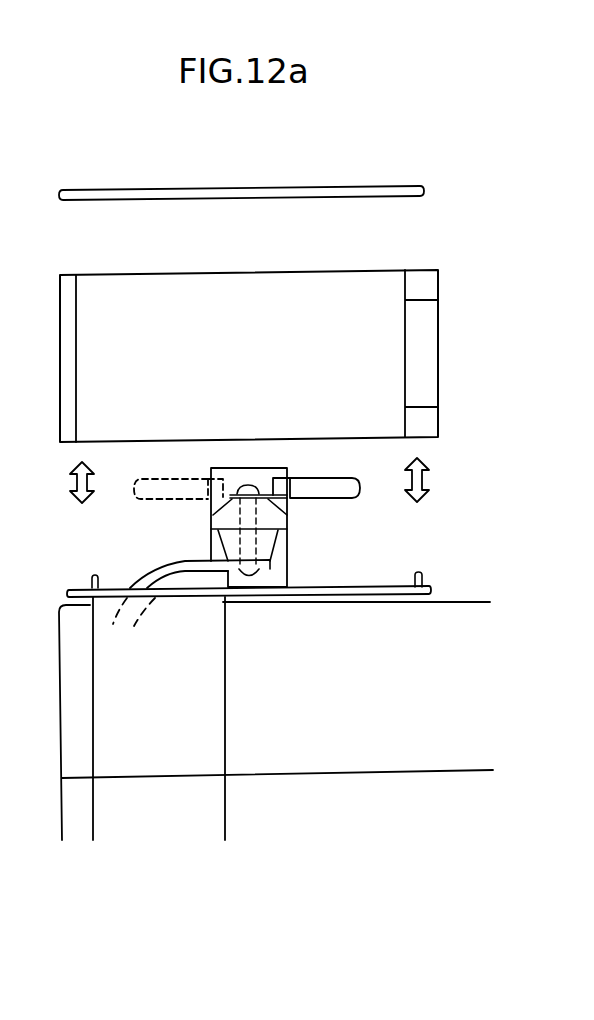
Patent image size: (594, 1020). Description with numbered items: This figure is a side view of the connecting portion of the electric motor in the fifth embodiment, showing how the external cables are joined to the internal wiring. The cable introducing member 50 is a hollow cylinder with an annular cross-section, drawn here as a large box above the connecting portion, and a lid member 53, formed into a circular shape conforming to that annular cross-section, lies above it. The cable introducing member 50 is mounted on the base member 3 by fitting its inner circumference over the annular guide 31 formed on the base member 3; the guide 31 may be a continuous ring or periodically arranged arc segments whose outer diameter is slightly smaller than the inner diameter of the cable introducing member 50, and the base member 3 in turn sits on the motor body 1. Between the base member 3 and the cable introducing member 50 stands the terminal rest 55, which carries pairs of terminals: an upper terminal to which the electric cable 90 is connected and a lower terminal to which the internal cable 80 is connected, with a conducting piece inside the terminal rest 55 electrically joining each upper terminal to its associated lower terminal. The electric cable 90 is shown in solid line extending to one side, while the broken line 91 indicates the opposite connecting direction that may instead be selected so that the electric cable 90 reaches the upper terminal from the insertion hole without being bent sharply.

The base 1 is at (450, 609).
The base member 3 is at (362, 586).
The annular guide 31 is at (94, 574).
The cable introducing member 50 is at (422, 350).
The lid member 53 is at (334, 187).
The terminal rest 55 is at (290, 504).
The internal cable 80 is at (151, 576).
The electric cable 90 is at (320, 477).
The broken line 91 is at (160, 477).